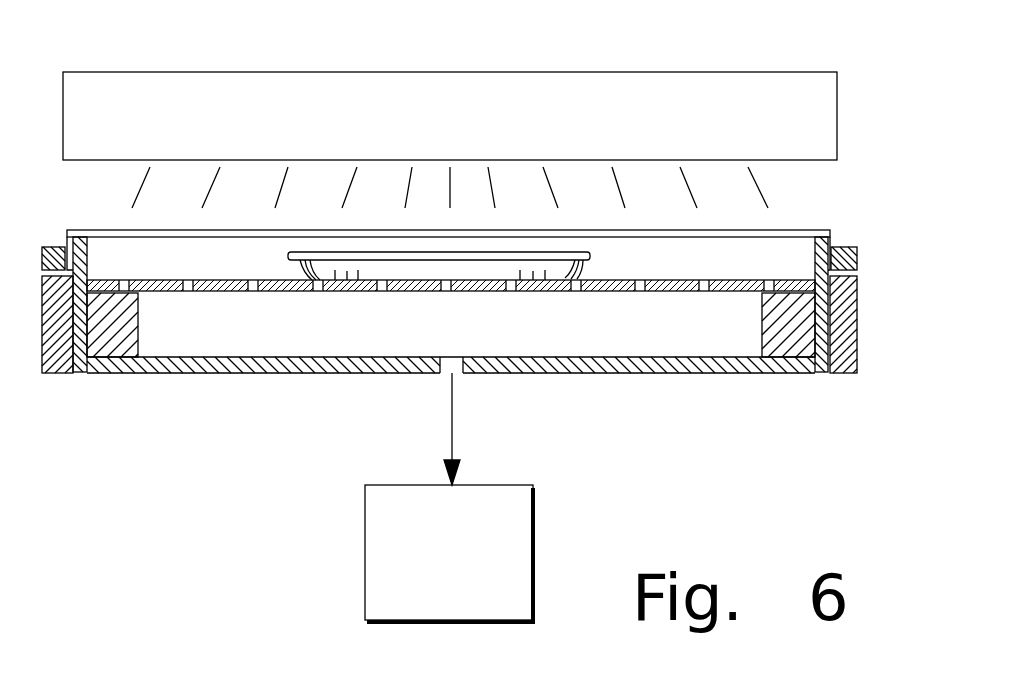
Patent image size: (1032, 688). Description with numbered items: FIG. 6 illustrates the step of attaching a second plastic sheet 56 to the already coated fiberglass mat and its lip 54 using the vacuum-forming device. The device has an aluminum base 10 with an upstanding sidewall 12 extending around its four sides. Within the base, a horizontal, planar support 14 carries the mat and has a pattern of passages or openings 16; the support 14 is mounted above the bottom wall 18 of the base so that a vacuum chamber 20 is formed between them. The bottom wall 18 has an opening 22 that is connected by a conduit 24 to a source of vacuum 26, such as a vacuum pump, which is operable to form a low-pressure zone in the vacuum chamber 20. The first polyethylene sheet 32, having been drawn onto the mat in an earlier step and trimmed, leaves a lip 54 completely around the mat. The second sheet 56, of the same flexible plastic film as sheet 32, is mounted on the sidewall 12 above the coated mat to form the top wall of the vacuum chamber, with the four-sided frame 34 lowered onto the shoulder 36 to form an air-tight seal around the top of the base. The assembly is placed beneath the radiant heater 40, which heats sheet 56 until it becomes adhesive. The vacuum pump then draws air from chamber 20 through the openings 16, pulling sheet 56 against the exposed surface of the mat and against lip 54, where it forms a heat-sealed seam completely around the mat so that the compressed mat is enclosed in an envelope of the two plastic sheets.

The aluminum base 10 is at (700, 373).
The upstanding sidewall 12 is at (485, 358).
The horizontal planar support 14 is at (683, 280).
The passages or openings 16 is at (192, 292).
The bottom wall 18 is at (205, 376).
The vacuum chamber 20 is at (448, 335).
The opening 22 is at (455, 375).
The conduit 24 is at (450, 438).
The source of vacuum 26 is at (365, 525).
The polyethylene sheet 32 is at (580, 262).
The four-sided frame 34 is at (850, 262).
The shoulder 36 is at (857, 292).
The radiant heater 40 is at (708, 72).
The lip 54 is at (303, 252).
The second plastic sheet 56 is at (817, 229).